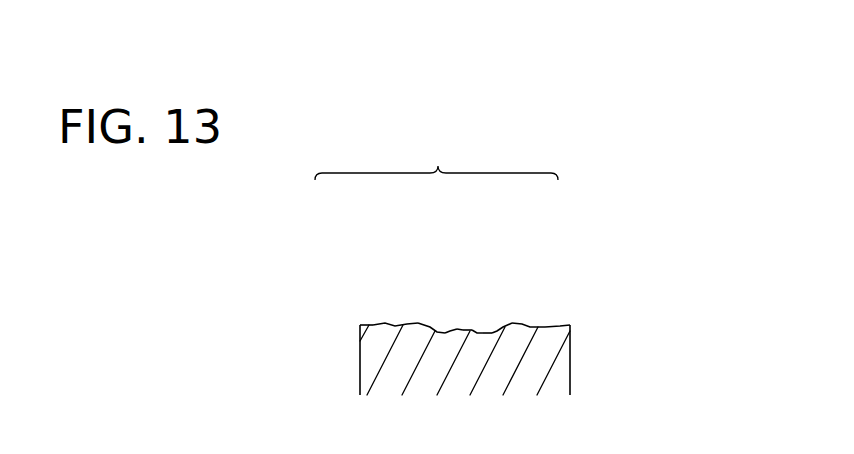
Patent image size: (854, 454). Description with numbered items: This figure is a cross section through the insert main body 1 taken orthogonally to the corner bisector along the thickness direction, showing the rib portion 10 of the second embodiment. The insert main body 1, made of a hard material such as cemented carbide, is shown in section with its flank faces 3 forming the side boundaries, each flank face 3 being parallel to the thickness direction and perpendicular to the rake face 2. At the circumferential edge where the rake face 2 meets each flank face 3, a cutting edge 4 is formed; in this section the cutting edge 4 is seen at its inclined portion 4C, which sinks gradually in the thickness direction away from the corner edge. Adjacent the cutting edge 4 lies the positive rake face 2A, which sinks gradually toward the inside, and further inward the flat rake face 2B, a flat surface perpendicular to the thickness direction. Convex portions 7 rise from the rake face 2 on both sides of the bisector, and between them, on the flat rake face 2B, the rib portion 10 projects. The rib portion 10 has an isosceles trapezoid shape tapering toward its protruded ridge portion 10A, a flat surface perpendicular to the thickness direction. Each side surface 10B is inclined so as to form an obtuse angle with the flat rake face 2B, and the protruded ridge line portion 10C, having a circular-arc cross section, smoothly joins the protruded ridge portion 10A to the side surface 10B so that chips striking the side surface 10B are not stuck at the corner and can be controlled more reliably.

The insert main body 1 is at (553, 374).
The rake face 2 is at (501, 233).
The positive rake face 2A is at (511, 280).
The flat rake face 2B is at (486, 233).
The flank face 3 is at (360, 363).
The cutting edge 4 is at (494, 308).
The inclined portion 4C is at (360, 325).
The convex portion 7 is at (417, 329).
The rib portion 10 is at (436, 233).
The protruded ridge portion 10A is at (470, 327).
The side surface 10B is at (450, 328).
The protruded ridge line portion 10C is at (458, 326).